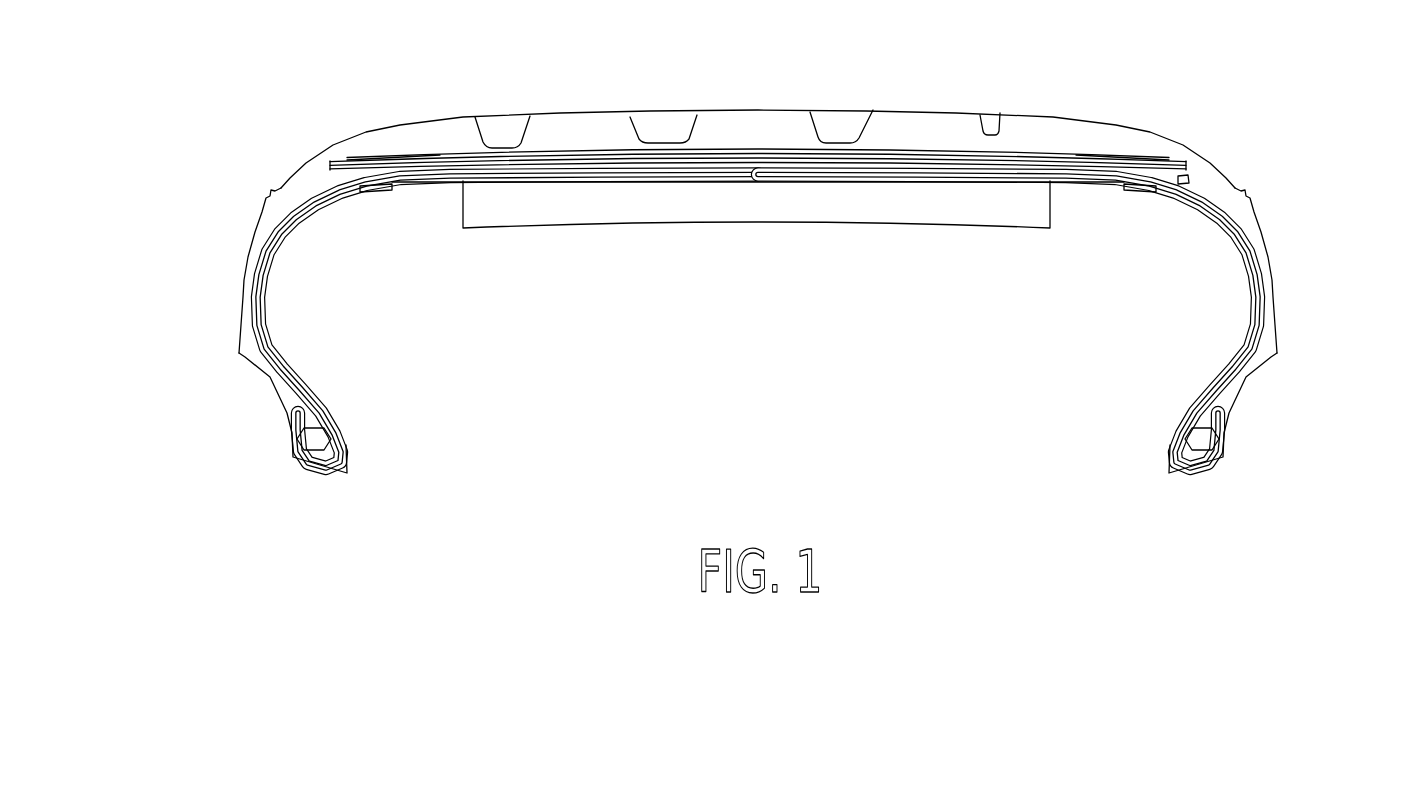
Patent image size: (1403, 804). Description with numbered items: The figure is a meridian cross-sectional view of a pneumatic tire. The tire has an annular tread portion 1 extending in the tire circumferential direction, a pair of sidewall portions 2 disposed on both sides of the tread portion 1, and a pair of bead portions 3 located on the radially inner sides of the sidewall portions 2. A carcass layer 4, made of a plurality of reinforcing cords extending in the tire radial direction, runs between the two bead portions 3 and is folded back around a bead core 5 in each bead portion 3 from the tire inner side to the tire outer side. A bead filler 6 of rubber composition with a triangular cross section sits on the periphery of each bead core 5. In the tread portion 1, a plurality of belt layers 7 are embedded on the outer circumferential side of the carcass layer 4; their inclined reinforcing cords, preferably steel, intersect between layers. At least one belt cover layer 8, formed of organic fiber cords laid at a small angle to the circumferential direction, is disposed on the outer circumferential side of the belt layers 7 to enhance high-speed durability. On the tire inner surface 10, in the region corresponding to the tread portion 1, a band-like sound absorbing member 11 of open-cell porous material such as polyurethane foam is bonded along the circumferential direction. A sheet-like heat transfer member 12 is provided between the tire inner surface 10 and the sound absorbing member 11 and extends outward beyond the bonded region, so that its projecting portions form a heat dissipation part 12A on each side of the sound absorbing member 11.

The tread portion 1 is at (752, 246).
The sidewall portions 2 is at (247, 257).
The bead portions 3 is at (280, 403).
The carcass layer 4 is at (1207, 190).
The bead core 5 is at (317, 438).
The bead filler 6 is at (307, 407).
The belt layers 7 is at (1140, 167).
The belt cover layer 8 is at (1063, 153).
The tire inner surface 10 is at (1183, 185).
The sound absorbing member 11 is at (913, 205).
The heat transfer member 12 is at (832, 173).
The heat dissipation part 12A is at (390, 188).